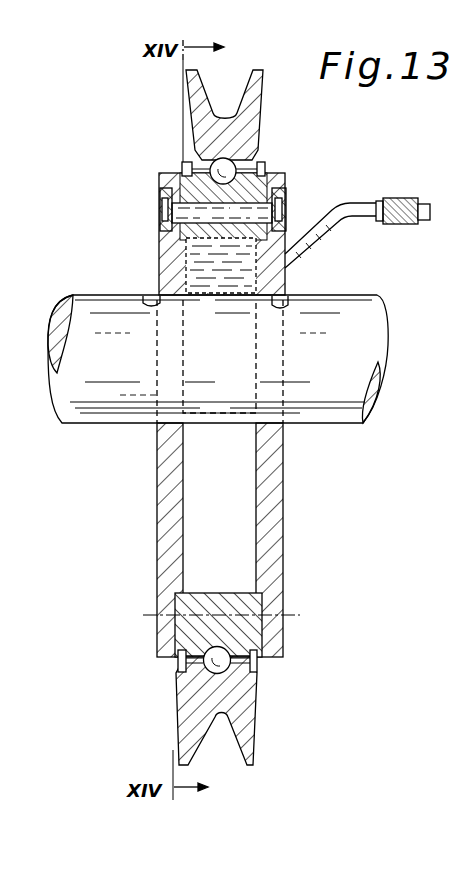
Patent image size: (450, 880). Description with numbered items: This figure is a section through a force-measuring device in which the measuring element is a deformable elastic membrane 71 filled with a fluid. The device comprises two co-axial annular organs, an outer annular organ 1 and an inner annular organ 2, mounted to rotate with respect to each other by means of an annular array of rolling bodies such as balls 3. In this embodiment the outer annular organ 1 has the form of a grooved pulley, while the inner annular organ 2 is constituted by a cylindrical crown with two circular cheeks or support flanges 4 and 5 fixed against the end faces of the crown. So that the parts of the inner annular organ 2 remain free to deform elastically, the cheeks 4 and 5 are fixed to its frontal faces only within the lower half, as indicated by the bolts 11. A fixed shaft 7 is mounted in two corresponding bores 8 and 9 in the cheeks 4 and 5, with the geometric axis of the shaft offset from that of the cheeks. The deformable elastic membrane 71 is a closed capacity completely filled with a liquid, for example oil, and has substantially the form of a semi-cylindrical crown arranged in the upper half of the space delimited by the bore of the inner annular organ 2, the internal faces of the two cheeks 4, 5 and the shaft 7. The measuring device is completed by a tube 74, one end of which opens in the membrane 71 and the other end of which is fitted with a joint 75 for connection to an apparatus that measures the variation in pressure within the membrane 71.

The outer annular organ 1 is at (207, 125).
The bolts 11 is at (182, 212).
The deformable elastic membrane 71 is at (192, 260).
The bore 8 is at (165, 300).
The bore 9 is at (286, 304).
The tube 74 is at (326, 216).
The joint 75 is at (406, 199).
The fixed shaft 7 is at (331, 420).
The cheek or support flange 4 is at (163, 502).
The cheek or support flange 5 is at (283, 531).
The inner annular organ 2 is at (196, 602).
The balls 3 is at (221, 666).